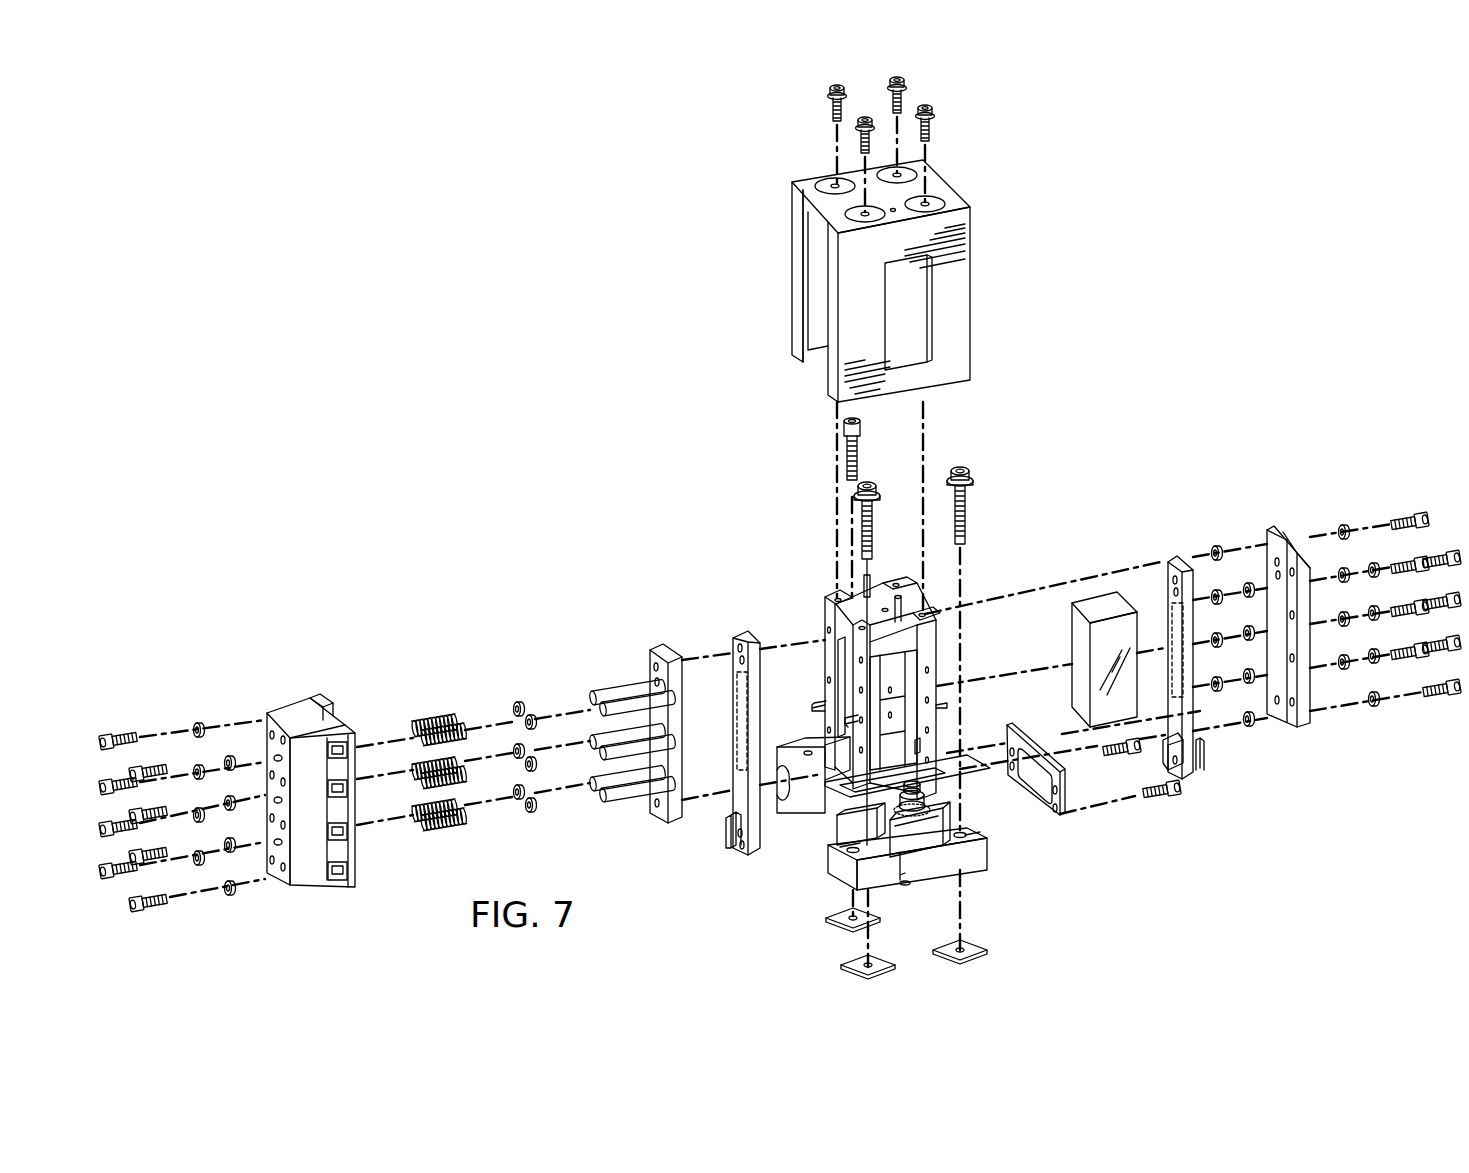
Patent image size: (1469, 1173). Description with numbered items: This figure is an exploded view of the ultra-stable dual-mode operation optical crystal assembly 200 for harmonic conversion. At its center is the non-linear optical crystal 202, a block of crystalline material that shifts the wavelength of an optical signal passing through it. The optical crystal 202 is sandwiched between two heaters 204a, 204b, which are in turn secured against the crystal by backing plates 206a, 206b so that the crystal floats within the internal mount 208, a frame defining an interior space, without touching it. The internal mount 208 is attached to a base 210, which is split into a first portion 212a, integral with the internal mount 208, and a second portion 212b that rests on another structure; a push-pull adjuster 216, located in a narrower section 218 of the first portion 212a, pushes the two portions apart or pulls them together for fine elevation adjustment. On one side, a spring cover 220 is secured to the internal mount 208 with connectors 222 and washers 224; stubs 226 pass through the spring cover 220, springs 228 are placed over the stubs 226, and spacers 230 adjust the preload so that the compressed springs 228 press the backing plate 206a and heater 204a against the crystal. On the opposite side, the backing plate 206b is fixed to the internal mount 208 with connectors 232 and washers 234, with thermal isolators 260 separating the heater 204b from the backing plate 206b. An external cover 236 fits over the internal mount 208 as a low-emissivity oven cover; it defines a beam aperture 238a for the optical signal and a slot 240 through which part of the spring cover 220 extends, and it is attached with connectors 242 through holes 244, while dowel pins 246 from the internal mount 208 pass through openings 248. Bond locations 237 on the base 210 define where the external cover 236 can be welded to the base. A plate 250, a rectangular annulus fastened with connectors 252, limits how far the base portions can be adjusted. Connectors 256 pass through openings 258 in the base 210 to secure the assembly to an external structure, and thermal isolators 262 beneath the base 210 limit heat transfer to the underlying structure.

The optical crystal assembly 200 is at (522, 359).
The non-linear optical crystal 202 is at (1072, 655).
The heater 204a is at (735, 646).
The heater 204b is at (1175, 560).
The backing plate 206a is at (655, 817).
The backing plate 206b is at (1312, 718).
The internal mount 208 is at (825, 625).
The base 210 is at (985, 878).
The first portion 212a is at (977, 822).
The second portion 212b is at (905, 885).
The push-pull adjuster 216 is at (925, 792).
The narrower section 218 is at (977, 840).
The spring cover 220 is at (282, 706).
The connectors 222 is at (150, 908).
The washers 224 is at (195, 722).
The stubs 226 is at (618, 690).
The springs 228 is at (428, 720).
The spacers 230 is at (515, 703).
The connectors 232 is at (1428, 692).
The washers 234 is at (1343, 530).
The external cover 236 is at (970, 292).
The bond locations 237 is at (808, 745).
The beam aperture 238a is at (938, 350).
The slot 240 is at (812, 380).
The connectors 242 is at (833, 114).
The holes 244 is at (848, 213).
The dowel pins 246 is at (865, 582).
The openings 248 is at (895, 208).
The plate 250 is at (1063, 818).
The connectors 252 is at (1150, 800).
The connectors 256 is at (965, 515).
The openings 258 is at (847, 843).
The thermal isolators 260 is at (1250, 725).
The thermal isolators 262 is at (985, 955).